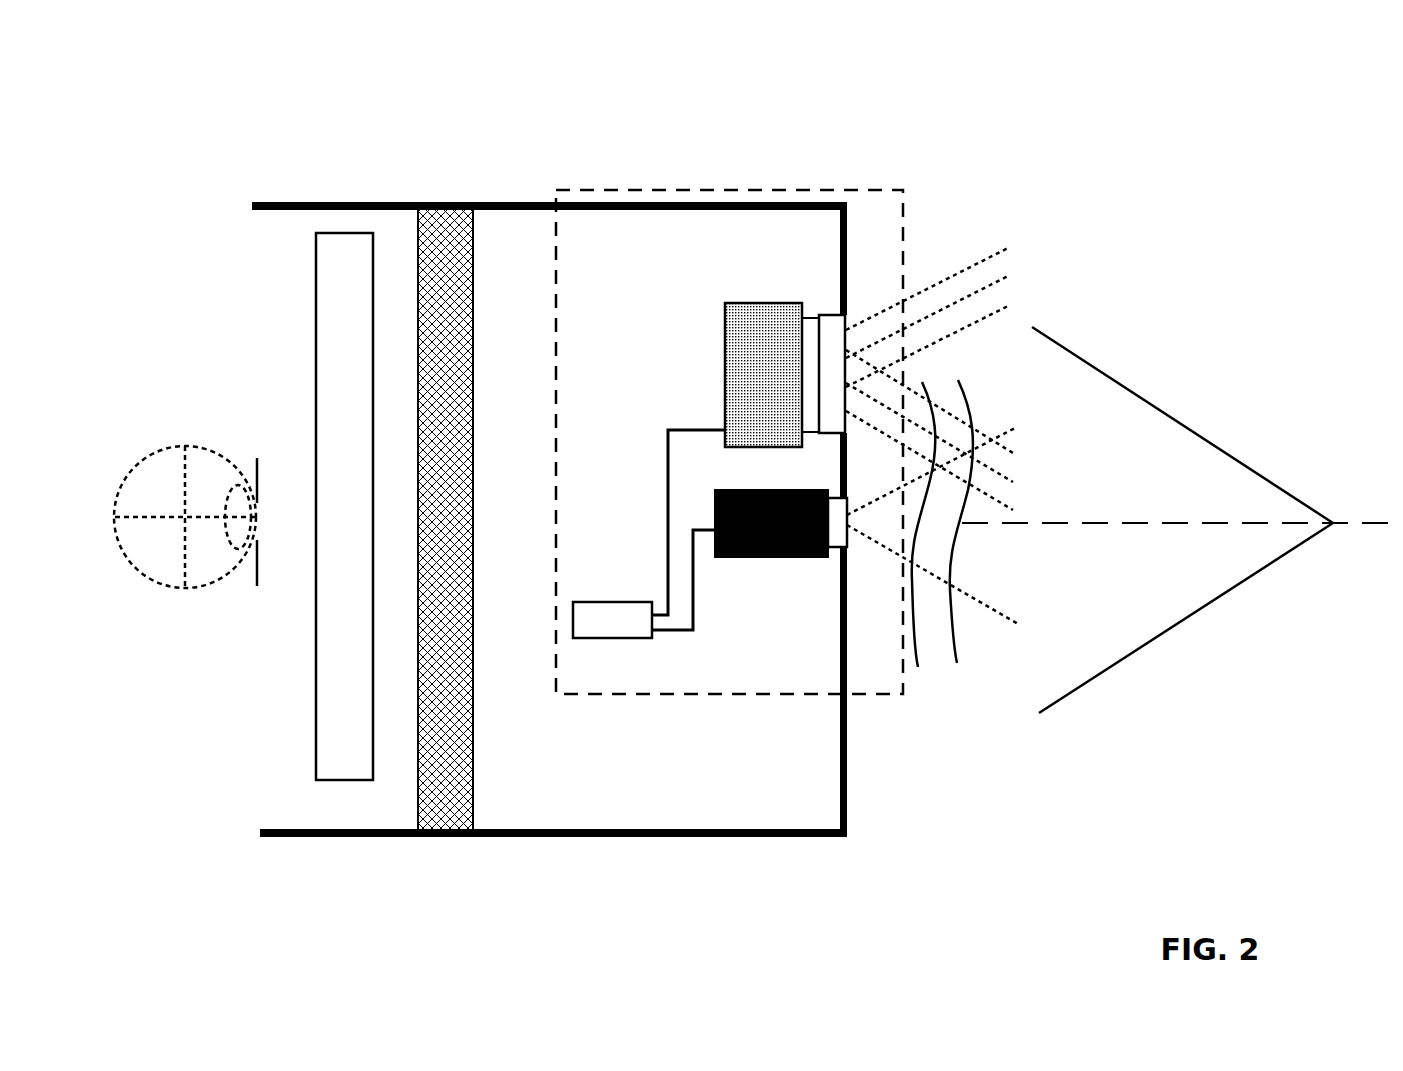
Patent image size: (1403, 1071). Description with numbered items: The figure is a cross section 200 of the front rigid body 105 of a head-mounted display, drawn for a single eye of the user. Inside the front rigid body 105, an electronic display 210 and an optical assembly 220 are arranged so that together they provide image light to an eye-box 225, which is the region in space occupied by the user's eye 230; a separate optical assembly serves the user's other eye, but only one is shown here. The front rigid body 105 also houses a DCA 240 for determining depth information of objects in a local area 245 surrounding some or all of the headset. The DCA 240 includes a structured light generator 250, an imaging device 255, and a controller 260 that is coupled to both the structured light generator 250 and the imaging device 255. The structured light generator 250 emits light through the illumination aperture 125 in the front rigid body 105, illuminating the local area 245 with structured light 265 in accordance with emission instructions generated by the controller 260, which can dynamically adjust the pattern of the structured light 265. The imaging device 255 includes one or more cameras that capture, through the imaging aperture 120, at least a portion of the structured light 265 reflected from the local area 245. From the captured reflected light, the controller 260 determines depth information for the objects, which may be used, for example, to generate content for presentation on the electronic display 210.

The cross section 200 is at (138, 115).
The front rigid body 105 is at (807, 835).
The electronic display 210 is at (417, 262).
The optical assembly 220 is at (362, 780).
The eye-box 225 is at (257, 458).
The eye 230 is at (148, 578).
The DCA 240 is at (593, 190).
The structured light generator 250 is at (764, 303).
The illumination aperture 125 is at (846, 323).
The imaging device 255 is at (777, 557).
The imaging aperture 120 is at (848, 548).
The controller 260 is at (585, 638).
The structured light 265 is at (962, 293).
The local area 245 is at (1184, 610).